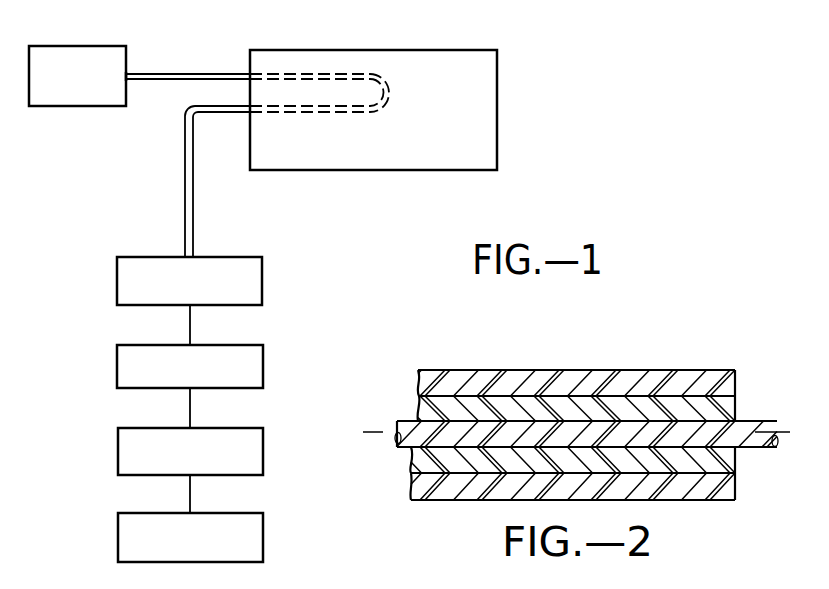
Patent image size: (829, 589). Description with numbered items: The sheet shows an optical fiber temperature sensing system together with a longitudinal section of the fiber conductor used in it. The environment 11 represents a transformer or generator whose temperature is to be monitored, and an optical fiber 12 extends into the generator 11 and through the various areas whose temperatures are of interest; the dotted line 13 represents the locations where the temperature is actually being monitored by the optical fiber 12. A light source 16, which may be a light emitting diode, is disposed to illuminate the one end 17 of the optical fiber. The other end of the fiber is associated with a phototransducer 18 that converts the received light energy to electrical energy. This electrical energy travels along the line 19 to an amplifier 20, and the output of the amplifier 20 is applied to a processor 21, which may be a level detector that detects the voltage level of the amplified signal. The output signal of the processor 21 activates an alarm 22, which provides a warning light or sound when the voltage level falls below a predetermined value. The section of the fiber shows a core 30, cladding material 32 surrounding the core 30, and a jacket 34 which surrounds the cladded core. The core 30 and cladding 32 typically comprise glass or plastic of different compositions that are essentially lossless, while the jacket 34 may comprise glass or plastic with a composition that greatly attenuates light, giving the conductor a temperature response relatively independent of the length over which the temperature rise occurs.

In FIG. 1, the environment 11 is at (400, 64).
In FIG. 1, the optical fiber 12 is at (182, 73).
In FIG. 1, the dotted line 13 is at (292, 70).
In FIG. 1, the light source 16 is at (90, 46).
In FIG. 1, the one end of the optical fiber 17 is at (128, 72).
In FIG. 1, the phototransducer 18 is at (117, 265).
In FIG. 1, the line 19 is at (190, 321).
In FIG. 1, the amplifier 20 is at (122, 363).
In FIG. 1, the processor 21 is at (121, 443).
In FIG. 1, the alarm 22 is at (122, 530).
In FIG. 2, the core 30 is at (400, 443).
In FIG. 2, the cladding material 32 is at (418, 405).
In FIG. 2, the jacket 34 is at (418, 379).